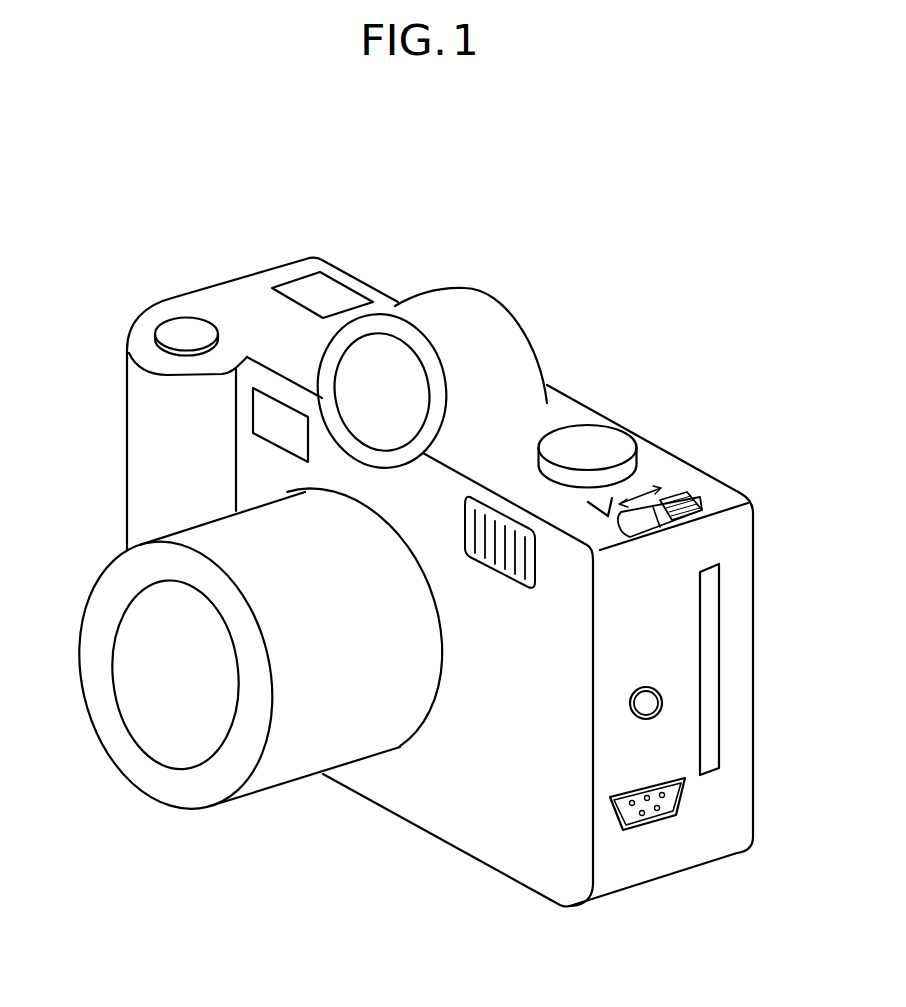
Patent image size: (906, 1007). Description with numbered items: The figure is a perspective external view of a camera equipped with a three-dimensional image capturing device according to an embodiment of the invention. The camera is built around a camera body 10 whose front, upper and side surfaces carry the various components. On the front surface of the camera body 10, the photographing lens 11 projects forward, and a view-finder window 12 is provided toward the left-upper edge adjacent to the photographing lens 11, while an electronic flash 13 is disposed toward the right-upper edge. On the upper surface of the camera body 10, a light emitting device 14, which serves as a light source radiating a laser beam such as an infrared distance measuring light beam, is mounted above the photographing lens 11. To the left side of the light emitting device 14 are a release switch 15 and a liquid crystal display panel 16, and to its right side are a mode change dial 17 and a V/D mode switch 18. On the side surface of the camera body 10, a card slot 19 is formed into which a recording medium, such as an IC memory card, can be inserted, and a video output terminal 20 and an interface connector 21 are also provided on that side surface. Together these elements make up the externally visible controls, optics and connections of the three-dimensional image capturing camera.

The camera body 10 is at (480, 813).
The photographing lens 11 is at (198, 787).
The view-finder window 12 is at (277, 423).
The electronic flash 13 is at (497, 573).
The light emitting device 14 is at (459, 313).
The release switch 15 is at (187, 333).
The liquid crystal display panel 16 is at (323, 293).
The mode change dial 17 is at (587, 448).
The V/D mode switch 18 is at (687, 503).
The card slot 19 is at (710, 610).
The video output terminal 20 is at (647, 705).
The interface connector 21 is at (668, 800).